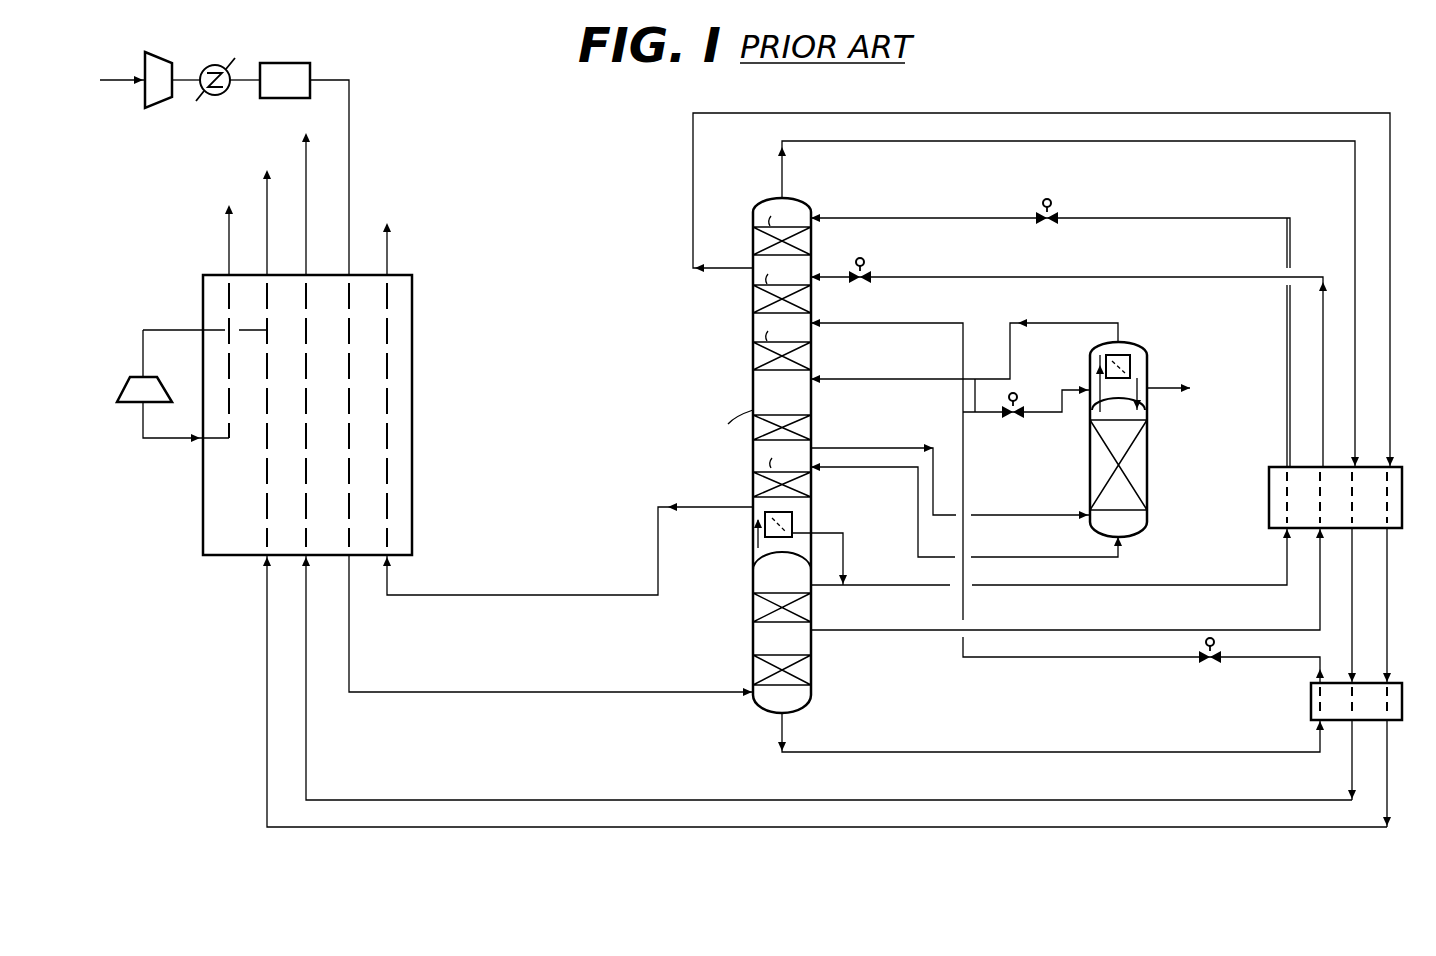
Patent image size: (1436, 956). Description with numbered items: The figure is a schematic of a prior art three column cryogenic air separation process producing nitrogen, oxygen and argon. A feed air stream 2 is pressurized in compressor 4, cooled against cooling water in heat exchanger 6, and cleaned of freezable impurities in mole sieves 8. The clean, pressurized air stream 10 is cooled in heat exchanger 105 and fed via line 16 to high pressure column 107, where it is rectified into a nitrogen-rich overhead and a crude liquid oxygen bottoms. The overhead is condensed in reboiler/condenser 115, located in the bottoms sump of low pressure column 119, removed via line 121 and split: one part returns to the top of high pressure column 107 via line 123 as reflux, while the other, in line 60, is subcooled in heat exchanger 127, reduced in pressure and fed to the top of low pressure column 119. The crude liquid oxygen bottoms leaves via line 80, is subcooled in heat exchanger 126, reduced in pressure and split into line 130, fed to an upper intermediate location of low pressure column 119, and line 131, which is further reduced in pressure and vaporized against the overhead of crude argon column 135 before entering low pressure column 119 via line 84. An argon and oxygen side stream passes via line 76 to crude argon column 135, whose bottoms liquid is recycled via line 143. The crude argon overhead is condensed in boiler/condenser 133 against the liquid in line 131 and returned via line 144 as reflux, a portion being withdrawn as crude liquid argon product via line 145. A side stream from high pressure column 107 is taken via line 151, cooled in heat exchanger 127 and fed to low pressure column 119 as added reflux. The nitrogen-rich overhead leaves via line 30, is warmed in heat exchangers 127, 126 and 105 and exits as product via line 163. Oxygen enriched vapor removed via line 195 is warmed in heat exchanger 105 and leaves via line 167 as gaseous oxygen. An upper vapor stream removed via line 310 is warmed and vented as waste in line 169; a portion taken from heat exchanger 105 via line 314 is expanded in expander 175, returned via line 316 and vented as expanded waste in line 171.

The feed air stream 2 is at (128, 76).
The compressor 4 is at (157, 56).
The heat exchanger 6 is at (210, 65).
The mole sieves 8 is at (274, 63).
The clean pressurized air stream 10 is at (357, 158).
The low pressure nitrogen product line 163 is at (306, 183).
The waste line 169 is at (267, 212).
The expanded waste line 171 is at (229, 237).
The gaseous oxygen product line 167 is at (389, 260).
The heat exchanger 105 is at (203, 516).
The line 314 is at (181, 330).
The expander 175 is at (125, 384).
The line 316 is at (169, 438).
The line 16 is at (495, 692).
The line 195 is at (711, 508).
The low pressure column 119 is at (753, 328).
The line 30 is at (785, 185).
The line 310 is at (698, 197).
The line 130 is at (862, 329).
The line 84 is at (861, 384).
The line 131 is at (985, 413).
The line 76 is at (877, 453).
The line 143 is at (1042, 561).
The reboiler/condenser 115 is at (795, 540).
The line 121 is at (841, 577).
The line 123 is at (826, 588).
The line 60 is at (1049, 588).
The line 151 is at (1138, 635).
The high pressure column 107 is at (808, 642).
The line 80 is at (1125, 758).
The heat exchanger 127 is at (1298, 531).
The heat exchanger 126 is at (1309, 697).
The crude argon column 135 is at (1090, 447).
The boiler/condenser 133 is at (1135, 360).
The line 144 is at (1150, 386).
The line 145 is at (1165, 392).